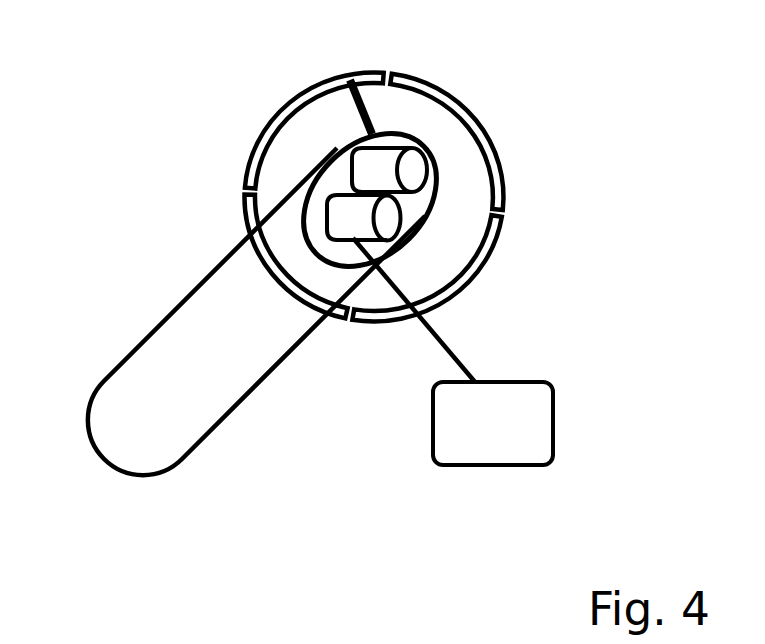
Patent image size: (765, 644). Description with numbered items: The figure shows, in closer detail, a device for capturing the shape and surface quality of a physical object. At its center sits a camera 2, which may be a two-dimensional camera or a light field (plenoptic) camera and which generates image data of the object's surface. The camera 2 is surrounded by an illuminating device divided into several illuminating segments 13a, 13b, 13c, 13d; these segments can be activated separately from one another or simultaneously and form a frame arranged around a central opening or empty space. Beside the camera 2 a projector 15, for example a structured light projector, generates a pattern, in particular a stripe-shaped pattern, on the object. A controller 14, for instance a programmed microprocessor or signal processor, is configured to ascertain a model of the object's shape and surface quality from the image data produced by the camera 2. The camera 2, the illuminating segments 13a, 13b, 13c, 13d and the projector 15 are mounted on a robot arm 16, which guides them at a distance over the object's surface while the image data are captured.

The camera 2 is at (363, 220).
The illuminating segment 13a is at (460, 103).
The illuminating segment 13b is at (473, 270).
The illuminating segment 13c is at (310, 297).
The illuminating segment 13d is at (257, 163).
The controller 14 is at (453, 351).
The projector 15 is at (380, 168).
The robot arm 16 is at (200, 320).